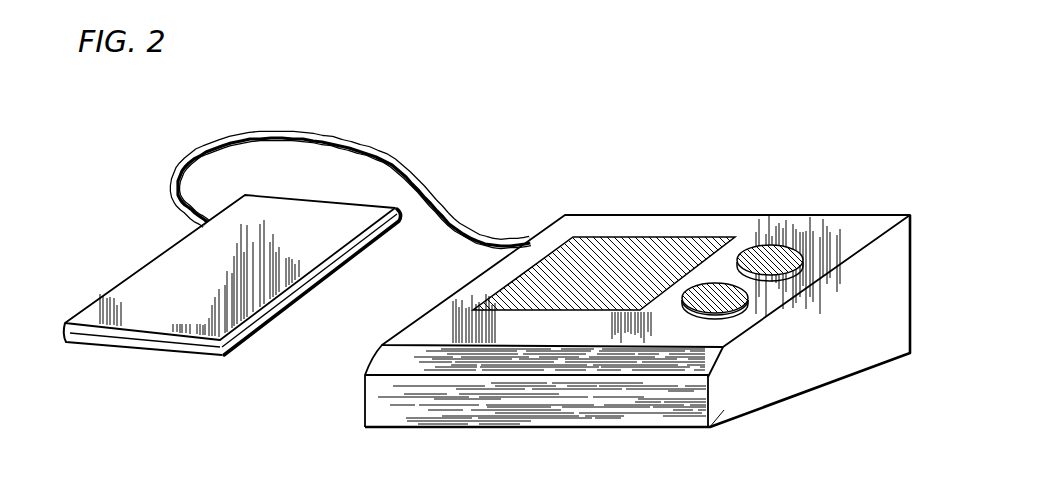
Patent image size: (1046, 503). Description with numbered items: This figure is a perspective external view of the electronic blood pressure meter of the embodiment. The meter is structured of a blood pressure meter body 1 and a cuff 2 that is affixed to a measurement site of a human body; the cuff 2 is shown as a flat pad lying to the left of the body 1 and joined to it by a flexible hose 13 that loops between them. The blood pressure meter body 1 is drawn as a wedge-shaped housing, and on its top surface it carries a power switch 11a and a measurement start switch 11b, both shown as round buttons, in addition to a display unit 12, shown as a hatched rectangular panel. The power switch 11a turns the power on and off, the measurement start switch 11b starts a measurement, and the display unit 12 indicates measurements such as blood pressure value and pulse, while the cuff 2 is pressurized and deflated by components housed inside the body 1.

The blood pressure meter body 1 is at (539, 412).
The cuff 2 is at (140, 342).
The power switch 11a is at (774, 256).
The measurement start switch 11b is at (712, 294).
The display unit 12 is at (597, 250).
The cable 13 is at (313, 132).